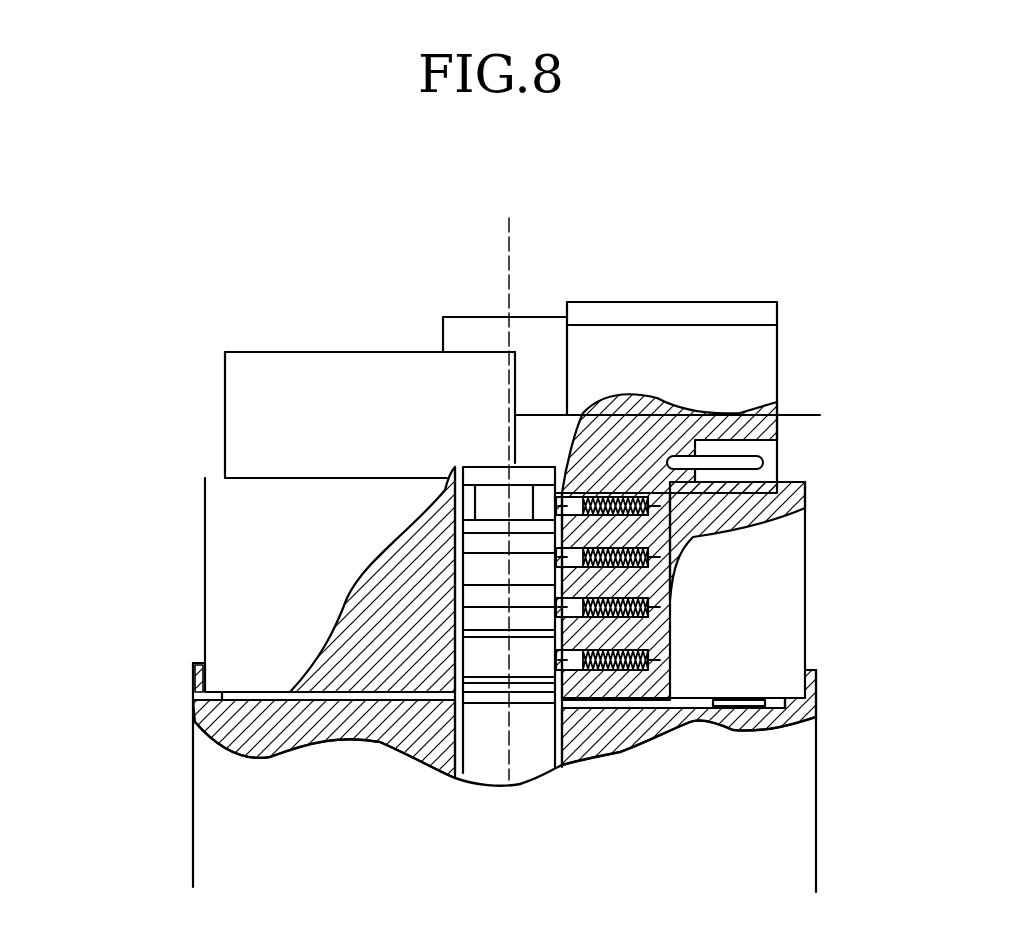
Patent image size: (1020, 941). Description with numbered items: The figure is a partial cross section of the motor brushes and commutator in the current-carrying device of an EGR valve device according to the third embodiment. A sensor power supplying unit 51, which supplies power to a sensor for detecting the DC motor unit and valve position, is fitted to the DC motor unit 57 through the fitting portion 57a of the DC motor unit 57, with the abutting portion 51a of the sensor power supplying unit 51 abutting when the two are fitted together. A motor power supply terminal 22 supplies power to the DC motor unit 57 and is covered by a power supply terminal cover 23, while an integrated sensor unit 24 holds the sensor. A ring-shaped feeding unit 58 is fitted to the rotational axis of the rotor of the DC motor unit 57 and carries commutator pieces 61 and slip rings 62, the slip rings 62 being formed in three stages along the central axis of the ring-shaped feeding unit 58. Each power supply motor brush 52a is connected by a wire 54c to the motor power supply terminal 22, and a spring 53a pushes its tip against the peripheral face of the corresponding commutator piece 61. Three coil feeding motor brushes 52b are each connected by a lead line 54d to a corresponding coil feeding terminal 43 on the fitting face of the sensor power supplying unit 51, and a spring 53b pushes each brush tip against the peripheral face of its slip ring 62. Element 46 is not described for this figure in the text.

The sensor power supplying unit 51 is at (168, 375).
The abutting portion 51a is at (212, 680).
The power supply motor brush 52a is at (567, 490).
The coil feeding motor brush 52b is at (553, 660).
The spring 53a is at (583, 415).
The spring 53b is at (655, 660).
The wire 54c is at (640, 473).
The lead line 54d is at (668, 555).
The motor power supply terminal 22 is at (770, 462).
The power supply terminal cover 23 is at (733, 302).
The integrated sensor unit 24 is at (340, 415).
The coil feeding terminal 43 is at (750, 697).
The base 46 is at (750, 733).
The DC motor unit 57 is at (816, 850).
The fitting portion 57a is at (193, 708).
The ring-shaped feeding unit 58 is at (353, 692).
The commutator piece 61 is at (498, 497).
The slip ring 62 is at (460, 608).